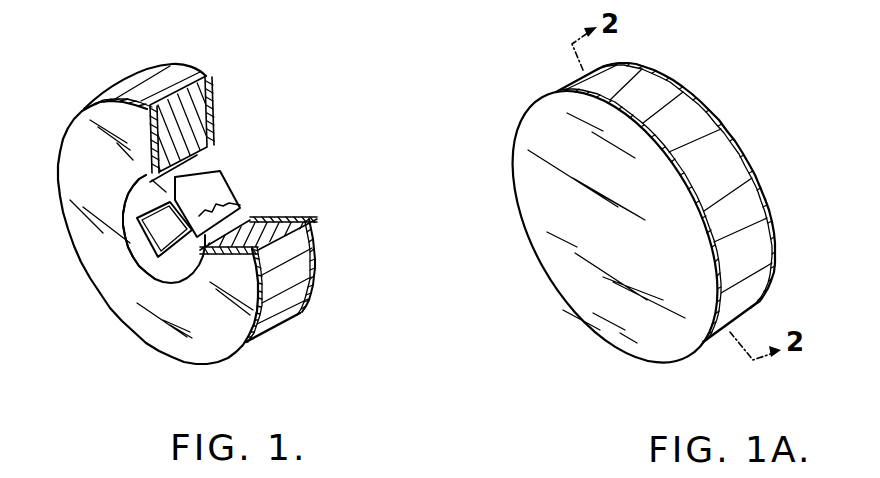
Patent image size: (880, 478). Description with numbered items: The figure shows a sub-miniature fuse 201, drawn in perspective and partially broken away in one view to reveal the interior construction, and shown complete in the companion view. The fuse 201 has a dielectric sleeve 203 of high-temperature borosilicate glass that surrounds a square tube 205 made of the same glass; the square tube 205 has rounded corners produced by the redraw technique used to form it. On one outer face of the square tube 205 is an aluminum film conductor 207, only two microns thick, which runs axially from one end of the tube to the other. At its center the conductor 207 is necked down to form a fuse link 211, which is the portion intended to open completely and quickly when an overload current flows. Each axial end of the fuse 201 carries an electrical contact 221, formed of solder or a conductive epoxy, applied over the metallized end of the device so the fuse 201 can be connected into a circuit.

In FIG. 1, the fuse 201 is at (112, 68).
In FIG. 1A, the fuse 201 is at (506, 124).
In FIG. 1, the dielectric sleeve 203 is at (294, 300).
In FIG. 1A, the dielectric sleeve 203 is at (742, 208).
In FIG. 1, the square tube 205 is at (151, 277).
In FIG. 1, the aluminum film conductor 207 is at (150, 181).
In FIG. 1, the fuse link 211 is at (200, 192).
In FIG. 1A, the electrical contact 221 is at (732, 128).